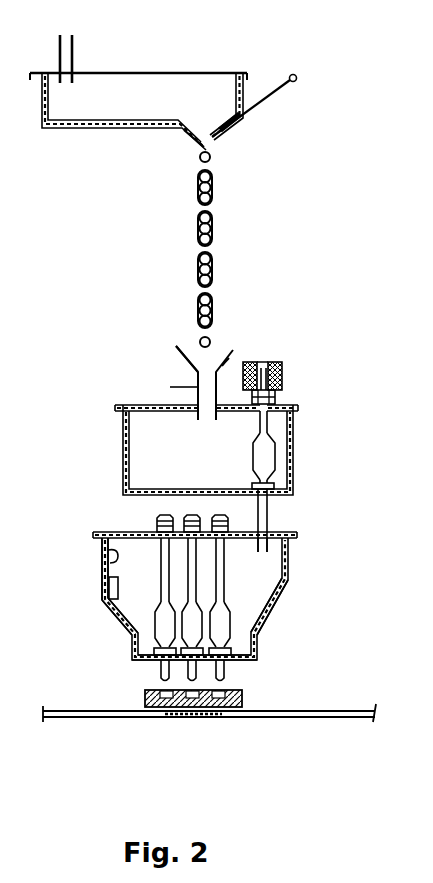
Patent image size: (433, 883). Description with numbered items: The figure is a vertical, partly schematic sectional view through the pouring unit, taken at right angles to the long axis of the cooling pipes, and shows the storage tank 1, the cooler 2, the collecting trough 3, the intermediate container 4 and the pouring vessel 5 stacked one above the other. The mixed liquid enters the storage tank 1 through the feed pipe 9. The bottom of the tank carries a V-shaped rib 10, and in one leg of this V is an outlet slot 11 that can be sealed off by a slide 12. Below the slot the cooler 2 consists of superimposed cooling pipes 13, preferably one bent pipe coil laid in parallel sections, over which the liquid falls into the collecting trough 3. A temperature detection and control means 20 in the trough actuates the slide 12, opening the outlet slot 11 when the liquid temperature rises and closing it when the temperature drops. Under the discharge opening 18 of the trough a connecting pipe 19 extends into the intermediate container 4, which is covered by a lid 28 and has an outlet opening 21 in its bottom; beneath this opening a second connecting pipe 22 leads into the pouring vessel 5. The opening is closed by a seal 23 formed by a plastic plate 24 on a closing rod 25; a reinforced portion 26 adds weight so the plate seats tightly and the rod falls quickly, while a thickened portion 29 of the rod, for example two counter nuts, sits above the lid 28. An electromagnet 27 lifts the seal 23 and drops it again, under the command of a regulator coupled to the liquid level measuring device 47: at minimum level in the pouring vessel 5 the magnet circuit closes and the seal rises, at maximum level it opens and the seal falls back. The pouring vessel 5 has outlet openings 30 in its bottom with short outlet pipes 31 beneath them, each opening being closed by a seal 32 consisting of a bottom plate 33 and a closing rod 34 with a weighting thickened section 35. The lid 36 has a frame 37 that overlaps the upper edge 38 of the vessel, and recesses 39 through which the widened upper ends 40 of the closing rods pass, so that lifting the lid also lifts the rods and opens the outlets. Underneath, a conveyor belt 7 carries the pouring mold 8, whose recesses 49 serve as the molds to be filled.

The storage tank 1 is at (125, 73).
The cooler 2 is at (198, 249).
The collecting trough 3 is at (182, 357).
The intermediate container 4 is at (131, 441).
The pouring vessel 5 is at (133, 603).
The conveyor belt 7 is at (50, 712).
The pouring mold 8 is at (218, 710).
The feed pipe 9 is at (73, 57).
The V-shaped rib 10 is at (186, 136).
The outlet slot 11 is at (208, 131).
The slide 12 is at (220, 140).
The cooling pipes 13 is at (214, 234).
The discharge opening 18 is at (195, 368).
The connecting pipe 19 is at (170, 387).
The temperature detection and control means 20 is at (229, 360).
The outlet opening 21 is at (268, 500).
The connecting pipe 22 is at (268, 528).
The seal 23 is at (281, 454).
The plastic plate 24 is at (277, 485).
The closing rod 25 is at (262, 427).
The reinforced portion 26 is at (265, 467).
The electromagnet 27 is at (281, 362).
The lid 28 is at (135, 405).
The thickened portion 29 is at (276, 396).
The outlet openings 30 is at (166, 659).
The short outlet pipes 31 is at (226, 673).
The seals 32 is at (147, 631).
The bottom plate 33 is at (253, 648).
The closing rod 34 is at (222, 583).
The thickened section 35 is at (222, 623).
The lid 36 is at (105, 533).
The frame 37 is at (100, 549).
The upper edge 38 is at (116, 558).
The recesses 39 is at (156, 531).
The upper ends 40 is at (160, 512).
The liquid level measuring device 47 is at (110, 589).
The recesses 49 is at (165, 713).